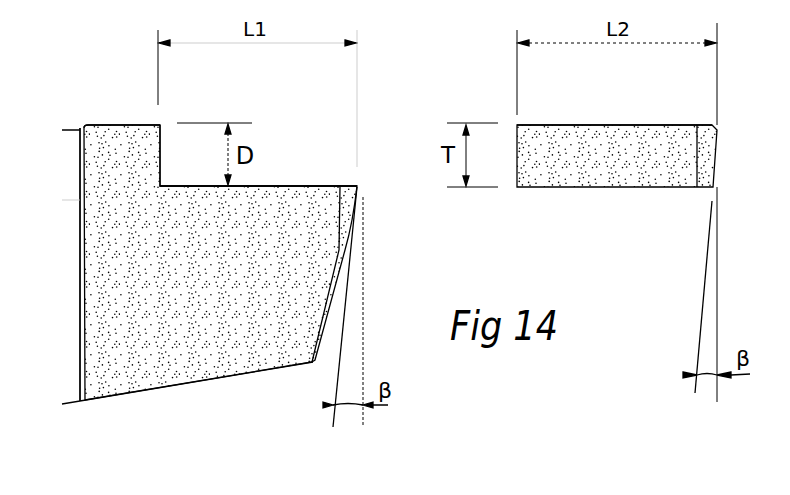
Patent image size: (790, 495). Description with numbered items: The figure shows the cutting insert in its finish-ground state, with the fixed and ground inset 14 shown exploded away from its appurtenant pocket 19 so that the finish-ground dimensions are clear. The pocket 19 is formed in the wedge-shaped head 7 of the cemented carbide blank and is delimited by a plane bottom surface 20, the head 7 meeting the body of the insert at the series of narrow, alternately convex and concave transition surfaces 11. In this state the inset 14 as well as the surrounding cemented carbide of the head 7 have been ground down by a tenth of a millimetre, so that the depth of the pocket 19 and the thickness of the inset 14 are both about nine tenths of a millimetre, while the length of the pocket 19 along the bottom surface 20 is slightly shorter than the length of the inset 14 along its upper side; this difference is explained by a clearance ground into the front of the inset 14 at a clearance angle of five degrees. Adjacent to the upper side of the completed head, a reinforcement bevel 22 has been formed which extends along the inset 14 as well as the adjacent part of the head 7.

The wedge-shaped head 7 is at (226, 388).
The transition part surfaces 11 is at (83, 127).
The inset 14 is at (583, 199).
The pocket 19 is at (184, 150).
The bottom surface 20 is at (294, 186).
The reinforcement bevel 22 is at (136, 125).